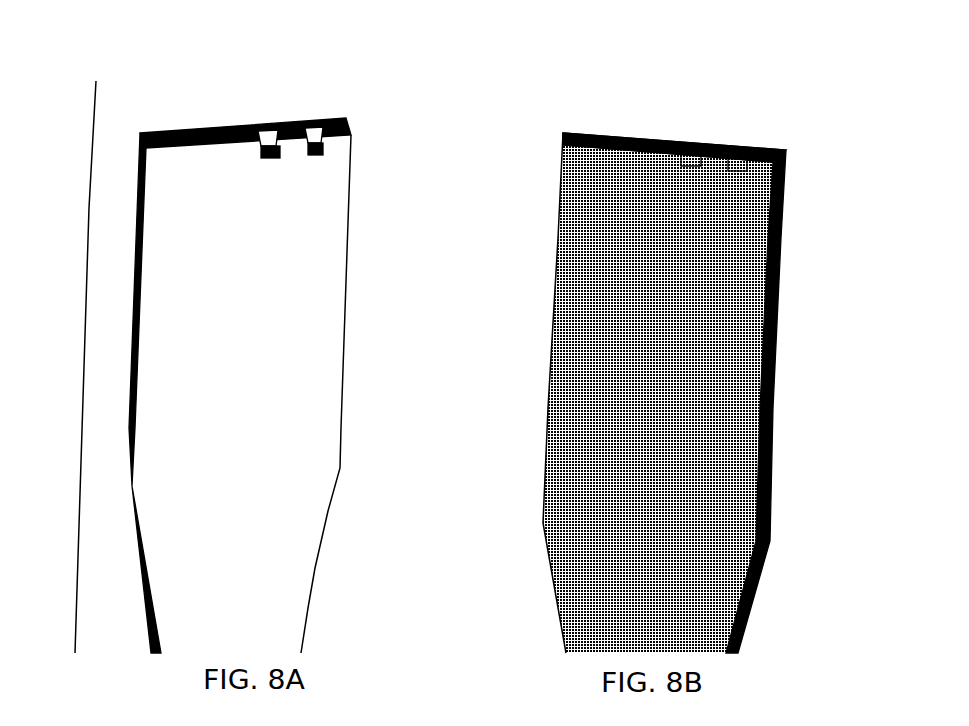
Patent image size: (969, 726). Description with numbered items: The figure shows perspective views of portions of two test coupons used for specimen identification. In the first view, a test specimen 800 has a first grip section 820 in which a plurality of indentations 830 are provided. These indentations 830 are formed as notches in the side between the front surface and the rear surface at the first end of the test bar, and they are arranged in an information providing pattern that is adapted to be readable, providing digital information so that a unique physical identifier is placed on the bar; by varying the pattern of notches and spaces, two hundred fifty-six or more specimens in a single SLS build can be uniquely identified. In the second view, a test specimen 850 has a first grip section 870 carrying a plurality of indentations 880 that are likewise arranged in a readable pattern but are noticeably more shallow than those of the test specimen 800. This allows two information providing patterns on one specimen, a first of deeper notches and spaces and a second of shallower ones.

In FIG. 8A, the test specimen 800 is at (250, 98).
In FIG. 8A, the first grip section 820 is at (173, 127).
In FIG. 8A, the plurality of indentations 830 is at (310, 127).
In FIG. 8B, the test specimen 850 is at (654, 103).
In FIG. 8B, the first grip section 870 is at (617, 145).
In FIG. 8B, the plurality of indentations 880 is at (733, 140).